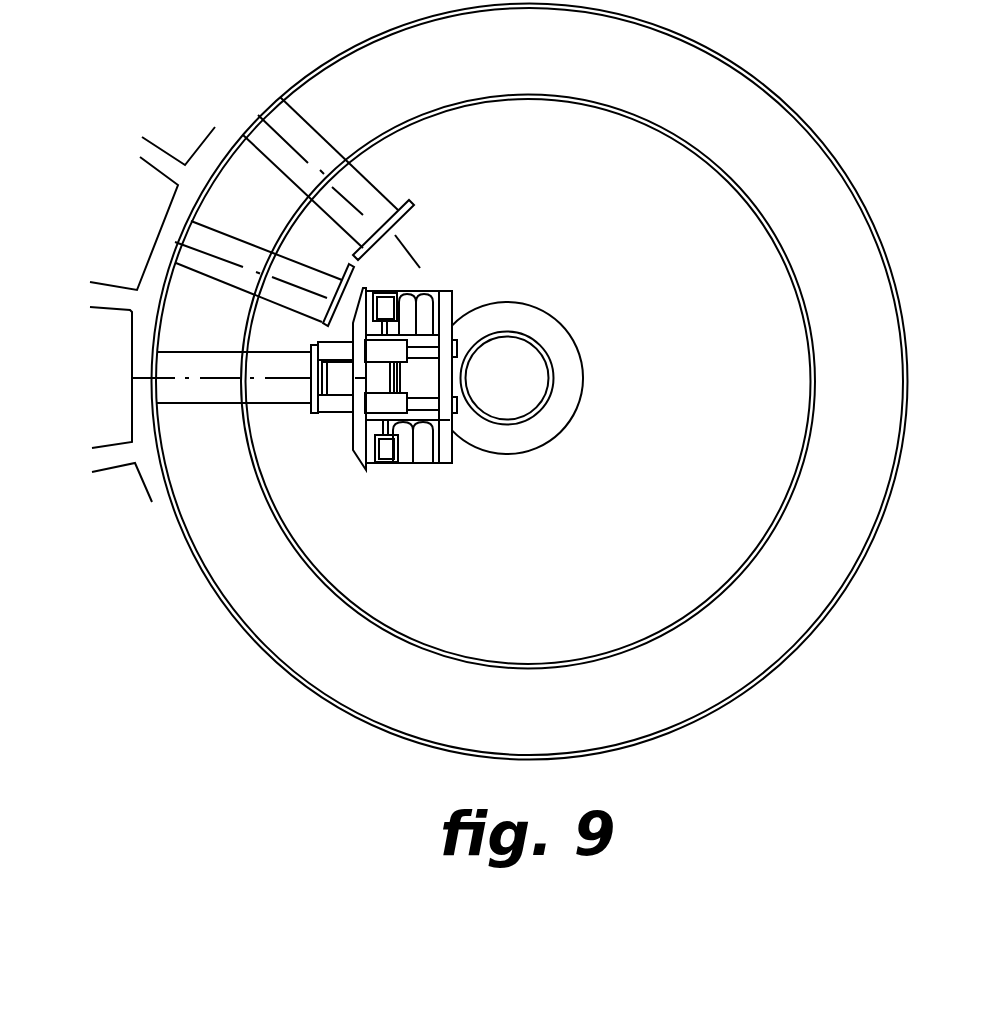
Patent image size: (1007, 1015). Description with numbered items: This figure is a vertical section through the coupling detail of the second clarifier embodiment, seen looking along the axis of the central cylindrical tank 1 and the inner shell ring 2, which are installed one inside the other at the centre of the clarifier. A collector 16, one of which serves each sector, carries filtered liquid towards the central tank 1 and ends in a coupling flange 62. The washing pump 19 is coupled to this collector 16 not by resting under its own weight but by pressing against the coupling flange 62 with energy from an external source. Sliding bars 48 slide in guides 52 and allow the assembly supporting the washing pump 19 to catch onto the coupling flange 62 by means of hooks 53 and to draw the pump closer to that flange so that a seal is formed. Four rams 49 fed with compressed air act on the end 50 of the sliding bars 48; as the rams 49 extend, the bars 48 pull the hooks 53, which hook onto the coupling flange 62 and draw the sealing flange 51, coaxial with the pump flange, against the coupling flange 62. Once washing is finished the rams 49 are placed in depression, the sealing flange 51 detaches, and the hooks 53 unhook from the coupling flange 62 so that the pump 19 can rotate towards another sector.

The central cylindrical tank 1 is at (803, 300).
The inner shell ring 2 is at (907, 395).
The collector 16 is at (312, 136).
The washing pump 19 is at (563, 352).
The sliding bars 48 is at (320, 427).
The rams 49 is at (423, 457).
The end of the sliding bars 50 is at (447, 465).
The sealing flange 51 is at (340, 413).
The guides 52 is at (395, 348).
The hooks 53 is at (317, 368).
The coupling flange 62 is at (407, 205).